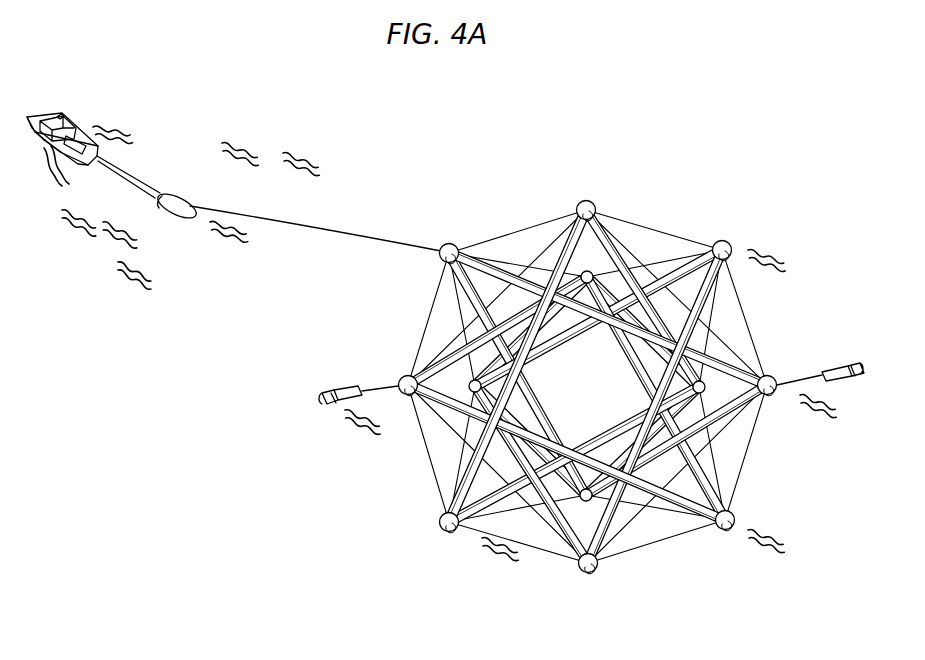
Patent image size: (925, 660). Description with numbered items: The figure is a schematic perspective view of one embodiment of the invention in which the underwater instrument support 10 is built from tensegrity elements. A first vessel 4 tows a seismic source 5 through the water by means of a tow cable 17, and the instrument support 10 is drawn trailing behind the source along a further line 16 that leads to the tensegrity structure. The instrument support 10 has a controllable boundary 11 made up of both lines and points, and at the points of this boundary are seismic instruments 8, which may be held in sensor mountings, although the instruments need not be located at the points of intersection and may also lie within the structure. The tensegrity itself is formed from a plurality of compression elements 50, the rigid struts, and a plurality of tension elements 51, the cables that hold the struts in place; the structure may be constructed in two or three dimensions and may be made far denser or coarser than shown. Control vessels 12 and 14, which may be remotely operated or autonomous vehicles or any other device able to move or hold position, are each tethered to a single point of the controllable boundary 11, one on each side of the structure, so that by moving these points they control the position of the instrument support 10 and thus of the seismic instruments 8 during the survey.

The first vessel 4 is at (52, 121).
The seismic source 5 is at (181, 198).
The tow cable 17 is at (146, 184).
The tow cable 16 is at (372, 236).
The seismic instruments 8 is at (592, 201).
The instrument support 10 is at (548, 354).
The controllable boundary 11 is at (748, 447).
The compression elements 50 is at (622, 518).
The tension elements 51 is at (718, 472).
The control vessel 12 is at (340, 384).
The control vessel 14 is at (835, 363).